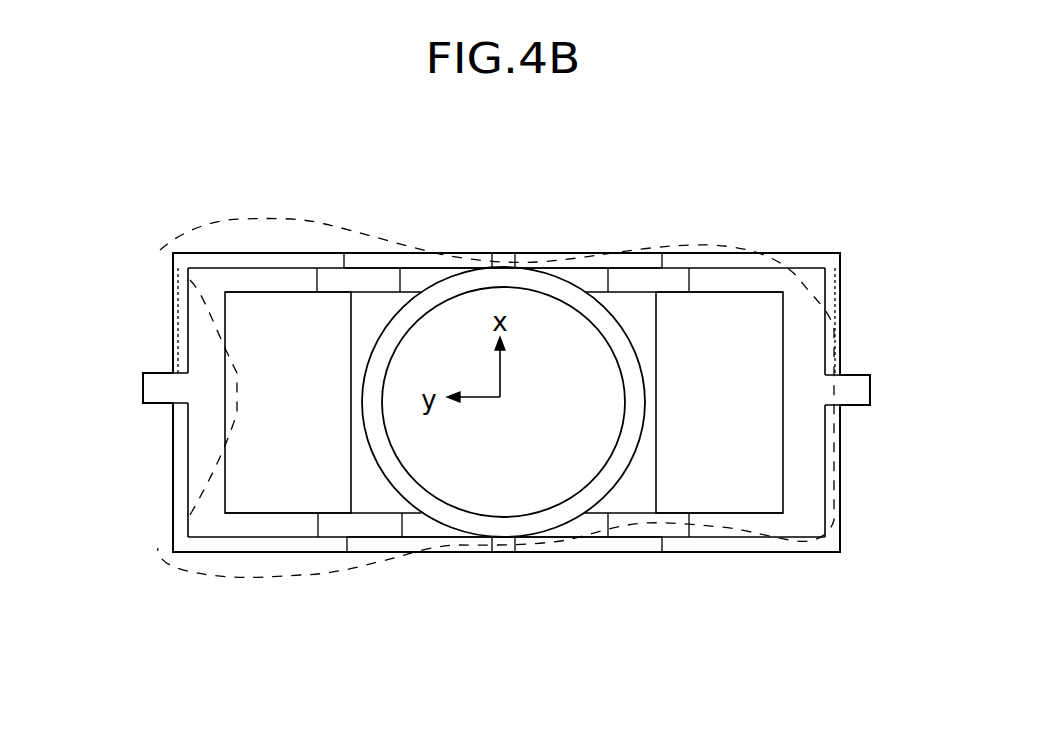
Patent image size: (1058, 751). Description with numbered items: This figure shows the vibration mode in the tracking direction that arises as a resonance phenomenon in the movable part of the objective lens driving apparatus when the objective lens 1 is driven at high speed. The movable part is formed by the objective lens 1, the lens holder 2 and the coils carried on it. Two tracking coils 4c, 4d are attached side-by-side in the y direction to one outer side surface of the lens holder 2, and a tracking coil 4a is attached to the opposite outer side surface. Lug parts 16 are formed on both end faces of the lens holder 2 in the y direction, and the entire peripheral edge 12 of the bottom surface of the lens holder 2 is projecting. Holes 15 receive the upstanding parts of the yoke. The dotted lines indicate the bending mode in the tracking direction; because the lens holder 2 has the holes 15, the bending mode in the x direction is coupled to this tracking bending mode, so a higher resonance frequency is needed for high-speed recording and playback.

The objective lens 1 is at (438, 348).
The lens holder 2 is at (287, 278).
The tracking coil 4a is at (430, 540).
The tracking coil 4c is at (415, 265).
The tracking coil 4d is at (573, 265).
The peripheral edge 12 is at (247, 543).
The hole 15 is at (285, 450).
The lug part 16 is at (148, 389).